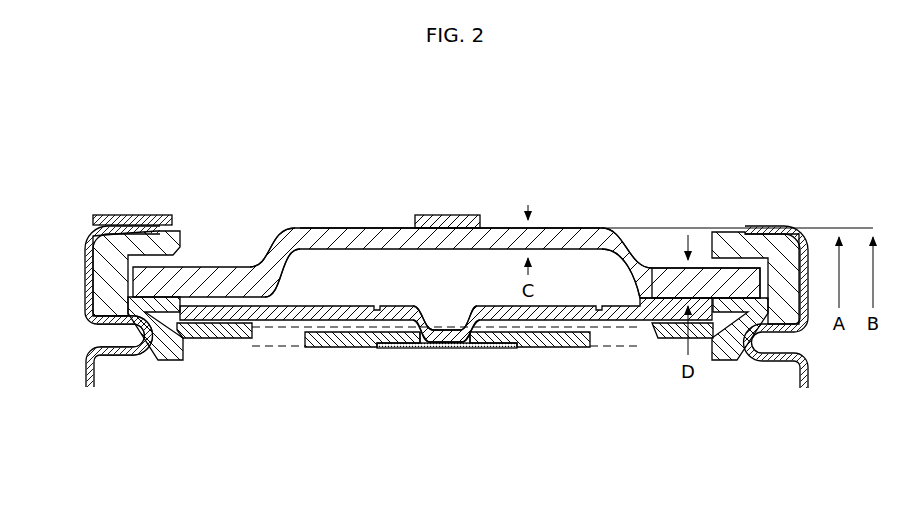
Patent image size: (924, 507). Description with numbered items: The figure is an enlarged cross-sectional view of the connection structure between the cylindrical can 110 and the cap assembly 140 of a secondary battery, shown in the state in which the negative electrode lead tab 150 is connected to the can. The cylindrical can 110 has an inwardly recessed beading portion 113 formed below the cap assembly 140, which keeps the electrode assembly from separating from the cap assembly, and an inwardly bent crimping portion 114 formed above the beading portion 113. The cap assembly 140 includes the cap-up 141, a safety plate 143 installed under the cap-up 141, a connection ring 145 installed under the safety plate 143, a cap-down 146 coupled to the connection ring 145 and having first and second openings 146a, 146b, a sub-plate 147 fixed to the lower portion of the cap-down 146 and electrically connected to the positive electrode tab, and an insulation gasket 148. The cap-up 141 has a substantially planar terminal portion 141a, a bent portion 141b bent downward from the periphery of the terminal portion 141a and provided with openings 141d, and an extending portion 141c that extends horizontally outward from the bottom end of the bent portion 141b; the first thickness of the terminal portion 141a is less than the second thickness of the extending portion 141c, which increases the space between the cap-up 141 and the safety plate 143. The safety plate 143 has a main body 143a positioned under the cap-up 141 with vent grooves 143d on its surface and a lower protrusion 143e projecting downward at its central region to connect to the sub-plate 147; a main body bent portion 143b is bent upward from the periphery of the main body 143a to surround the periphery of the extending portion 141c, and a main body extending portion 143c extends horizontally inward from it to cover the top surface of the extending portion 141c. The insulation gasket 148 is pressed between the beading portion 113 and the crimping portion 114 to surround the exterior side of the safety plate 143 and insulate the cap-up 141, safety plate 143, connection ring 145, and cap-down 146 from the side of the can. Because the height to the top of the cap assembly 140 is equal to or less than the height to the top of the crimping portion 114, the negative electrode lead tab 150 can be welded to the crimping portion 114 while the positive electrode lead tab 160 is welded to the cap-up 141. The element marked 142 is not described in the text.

The cylindrical can 110 is at (92, 390).
The beading portion 113 is at (110, 342).
The crimping portion 114 is at (130, 222).
The cap assembly 140 is at (612, 193).
The cap-up 141 is at (318, 162).
The terminal portion 141a is at (497, 226).
The bent portion 141b is at (292, 268).
The extending portion 141c is at (240, 268).
The openings 141d is at (617, 268).
The left flange of frame 142 is at (230, 280).
The safety plate 143 is at (488, 432).
The main body 143a is at (655, 300).
The main body bent portion 143b is at (773, 285).
The main body extending portion 143c is at (728, 322).
The vent grooves 143d is at (593, 322).
The lower protrusion 143e is at (460, 342).
The connection ring 145 is at (210, 338).
The cap-down 146 is at (323, 347).
The first opening 146a is at (420, 338).
The second opening 146b is at (267, 342).
The sub-plate 147 is at (385, 348).
The insulation gasket 148 is at (167, 355).
The negative electrode lead tab 150 is at (103, 214).
The positive electrode lead tab 160 is at (447, 230).